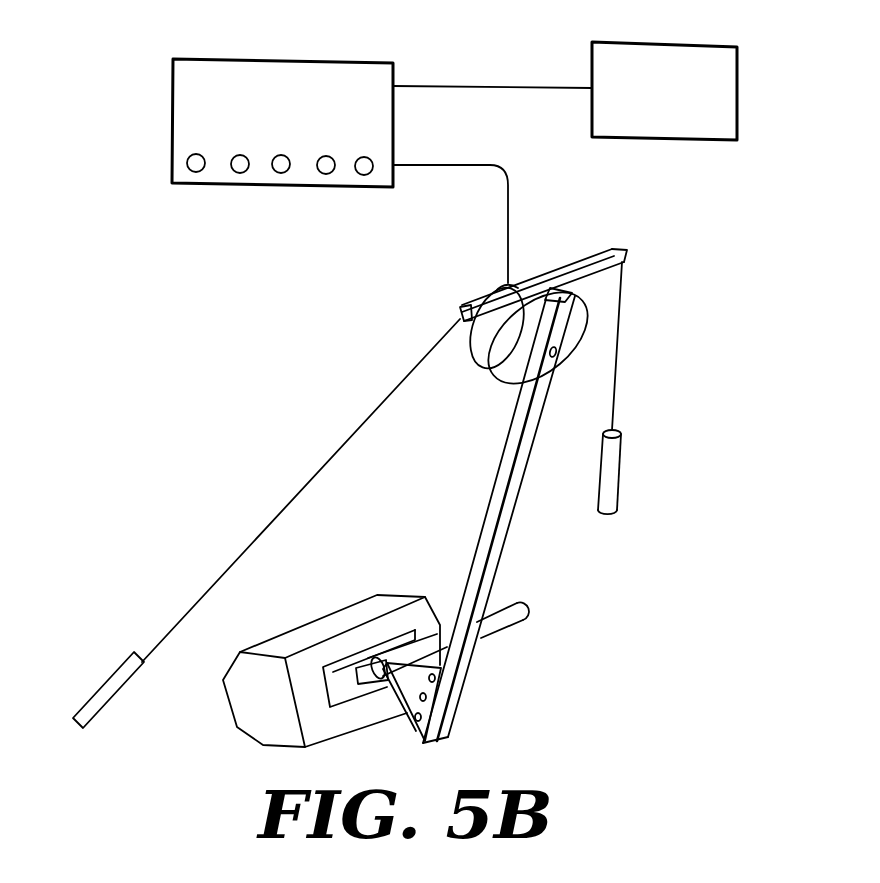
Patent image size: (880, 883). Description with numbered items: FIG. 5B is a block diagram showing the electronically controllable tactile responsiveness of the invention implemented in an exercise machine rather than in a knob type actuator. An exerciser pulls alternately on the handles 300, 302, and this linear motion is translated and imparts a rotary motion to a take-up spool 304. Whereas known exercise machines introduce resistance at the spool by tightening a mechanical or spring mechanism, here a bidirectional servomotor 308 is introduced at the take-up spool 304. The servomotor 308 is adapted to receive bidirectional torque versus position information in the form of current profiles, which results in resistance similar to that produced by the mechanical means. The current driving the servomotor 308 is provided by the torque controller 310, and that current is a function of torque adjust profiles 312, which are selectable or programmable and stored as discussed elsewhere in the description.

The handle 300 is at (107, 685).
The handle 302 is at (620, 478).
The take-up spool 304 is at (537, 283).
The bidirectional servomotor 308 is at (494, 288).
The torque controller 310 is at (338, 60).
The torque adjust profiles 312 is at (683, 43).